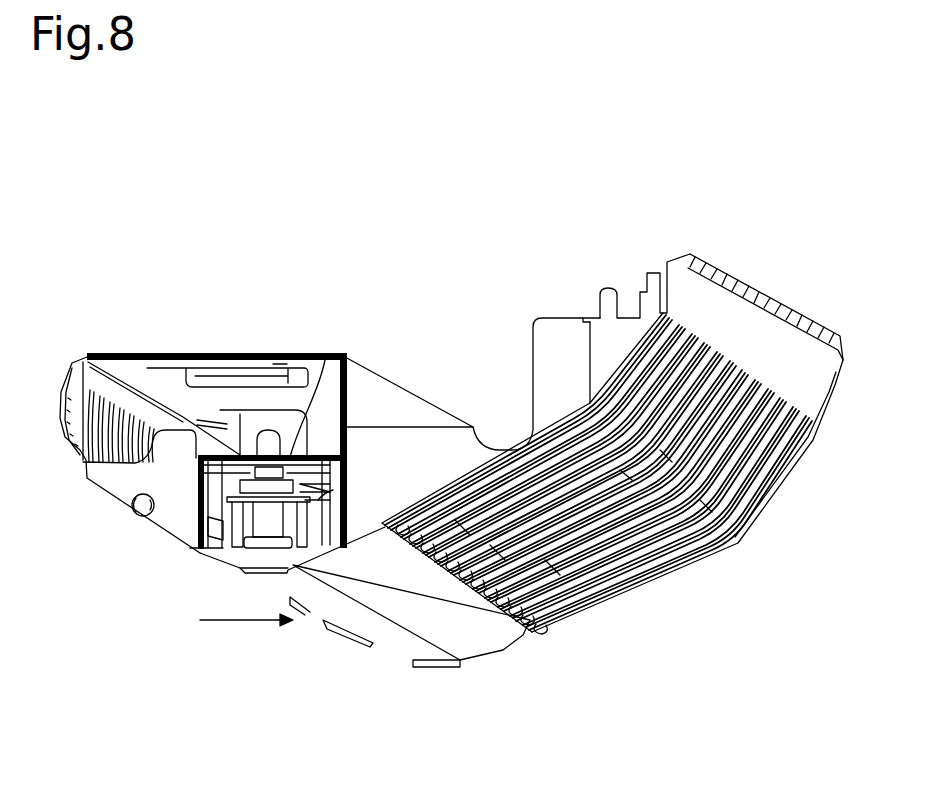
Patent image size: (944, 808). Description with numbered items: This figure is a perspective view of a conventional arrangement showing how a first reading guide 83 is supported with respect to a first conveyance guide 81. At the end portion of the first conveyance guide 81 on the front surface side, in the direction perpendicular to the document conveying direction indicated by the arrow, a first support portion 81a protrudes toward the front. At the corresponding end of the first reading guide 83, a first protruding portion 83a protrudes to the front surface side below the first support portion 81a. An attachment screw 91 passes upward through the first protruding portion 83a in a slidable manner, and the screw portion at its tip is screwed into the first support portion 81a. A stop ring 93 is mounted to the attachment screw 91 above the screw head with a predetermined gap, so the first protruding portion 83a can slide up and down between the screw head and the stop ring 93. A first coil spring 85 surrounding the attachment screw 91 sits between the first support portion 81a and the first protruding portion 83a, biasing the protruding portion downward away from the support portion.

The first conveyance guide 81 is at (703, 298).
The first support portion 81a is at (325, 360).
The first reading guide 83 is at (322, 598).
The first protruding portion 83a is at (318, 500).
The first coil spring 85 is at (203, 445).
The attachment screw 91 is at (263, 540).
The stop ring 93 is at (333, 465).